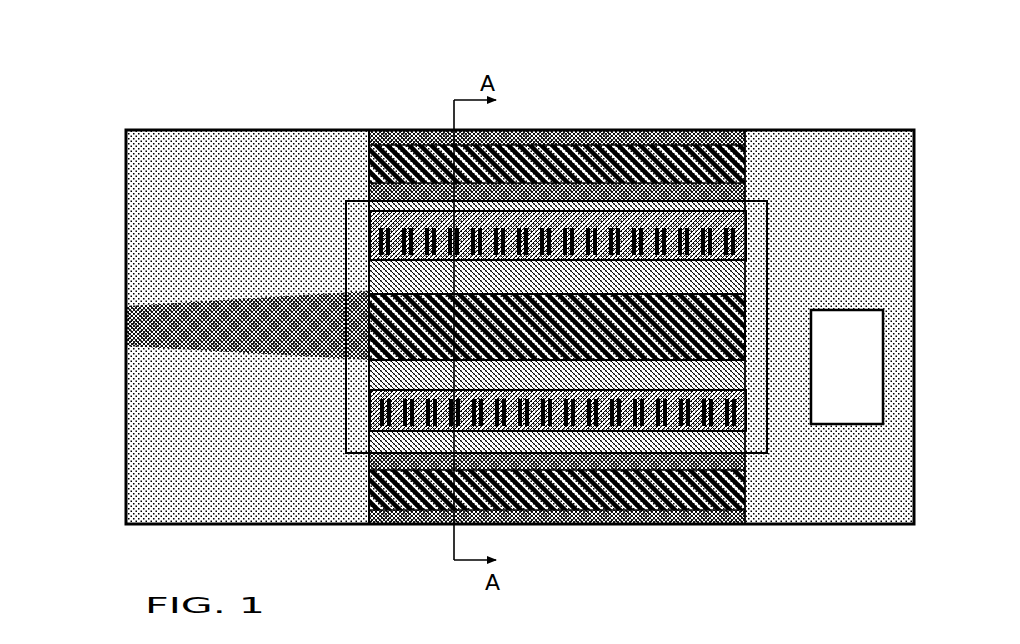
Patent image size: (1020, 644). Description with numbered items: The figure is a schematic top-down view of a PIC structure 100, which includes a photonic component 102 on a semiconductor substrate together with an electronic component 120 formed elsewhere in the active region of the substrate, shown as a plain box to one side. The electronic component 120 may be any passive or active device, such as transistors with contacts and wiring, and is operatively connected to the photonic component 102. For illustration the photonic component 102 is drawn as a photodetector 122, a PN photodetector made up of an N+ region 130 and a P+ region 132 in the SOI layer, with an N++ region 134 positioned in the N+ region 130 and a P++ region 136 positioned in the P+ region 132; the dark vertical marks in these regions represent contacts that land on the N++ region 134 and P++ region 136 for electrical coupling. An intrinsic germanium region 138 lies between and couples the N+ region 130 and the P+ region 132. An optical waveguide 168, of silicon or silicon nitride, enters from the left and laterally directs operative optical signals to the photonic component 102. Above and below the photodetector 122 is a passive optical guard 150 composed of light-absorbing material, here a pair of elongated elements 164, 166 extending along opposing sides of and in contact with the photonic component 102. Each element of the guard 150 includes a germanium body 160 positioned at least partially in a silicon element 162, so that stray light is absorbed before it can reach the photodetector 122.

The PIC structure 100 is at (115, 154).
The photonic component 102 is at (523, 254).
The photodetector 122 is at (337, 248).
The electronic component 120 is at (847, 392).
The N+ region 130 is at (395, 267).
The P+ region 132 is at (420, 368).
The N++ region 134 is at (508, 215).
The P++ region 136 is at (526, 412).
The germanium region 138 is at (582, 320).
The passive optical guard 150 is at (590, 324).
The germanium body 160 is at (581, 165).
The silicon element 162 is at (712, 183).
The elongated element 164 is at (359, 148).
The elongated element 166 is at (358, 491).
The optical waveguide 168 is at (227, 315).